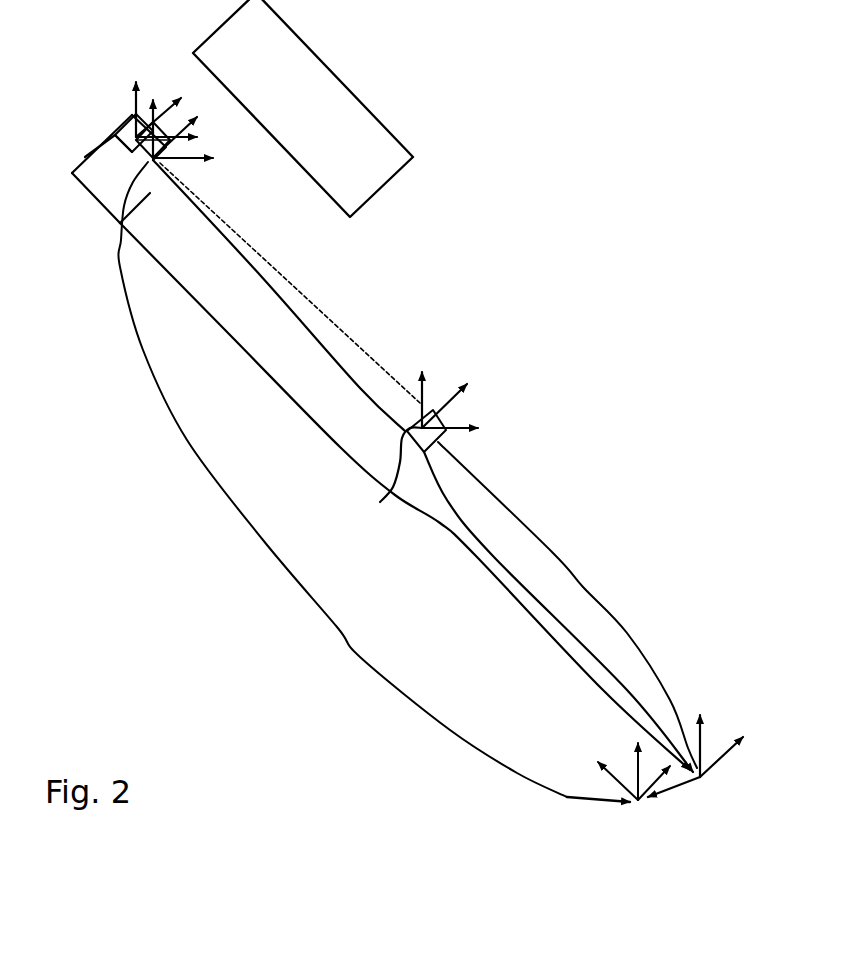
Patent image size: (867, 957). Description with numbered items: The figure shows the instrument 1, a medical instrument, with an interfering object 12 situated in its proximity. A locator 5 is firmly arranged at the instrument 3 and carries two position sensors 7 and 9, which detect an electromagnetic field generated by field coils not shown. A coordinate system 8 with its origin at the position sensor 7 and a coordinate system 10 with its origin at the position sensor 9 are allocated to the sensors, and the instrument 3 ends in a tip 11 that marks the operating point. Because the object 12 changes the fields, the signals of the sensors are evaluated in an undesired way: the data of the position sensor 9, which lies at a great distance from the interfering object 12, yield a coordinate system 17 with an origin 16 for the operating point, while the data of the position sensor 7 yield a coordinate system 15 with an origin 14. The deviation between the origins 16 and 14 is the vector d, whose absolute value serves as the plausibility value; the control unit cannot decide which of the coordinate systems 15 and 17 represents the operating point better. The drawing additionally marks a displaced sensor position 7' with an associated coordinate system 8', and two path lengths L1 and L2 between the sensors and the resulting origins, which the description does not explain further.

The instrument 1 is at (500, 228).
The instrument 3 is at (260, 367).
The locator 5 is at (300, 283).
The position sensor 7 is at (108, 170).
The displaced laser source housing 7' is at (82, 161).
The coordinate system 8 is at (153, 121).
The displaced laser source 8' is at (141, 106).
The position sensor 9 is at (402, 469).
The coordinate system 10 is at (428, 387).
The tip 11 is at (700, 785).
The interfering object 12 is at (385, 117).
The origin 14 is at (637, 807).
The coordinate system 15 is at (612, 777).
The origin 16 is at (707, 780).
The coordinate system 17 is at (727, 757).
The beam path length L1 is at (583, 587).
The beam path length L2 is at (337, 627).